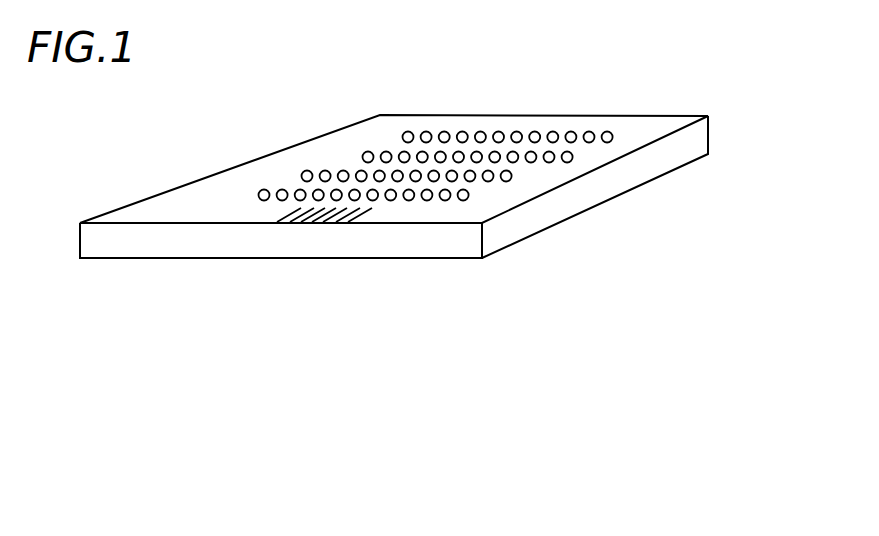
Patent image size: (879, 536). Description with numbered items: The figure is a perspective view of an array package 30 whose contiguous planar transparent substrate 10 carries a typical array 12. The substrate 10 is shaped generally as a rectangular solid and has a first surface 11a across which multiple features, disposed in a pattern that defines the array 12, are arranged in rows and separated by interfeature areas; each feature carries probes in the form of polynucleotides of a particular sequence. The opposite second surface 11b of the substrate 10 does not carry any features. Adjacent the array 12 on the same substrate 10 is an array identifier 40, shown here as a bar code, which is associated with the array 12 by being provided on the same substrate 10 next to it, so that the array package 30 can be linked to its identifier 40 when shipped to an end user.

The substrate 10 is at (450, 162).
The first surface 11a is at (643, 127).
The second surface 11b is at (670, 172).
The array 12 is at (301, 174).
The array package 30 is at (445, 85).
The array identifier 40 is at (290, 216).